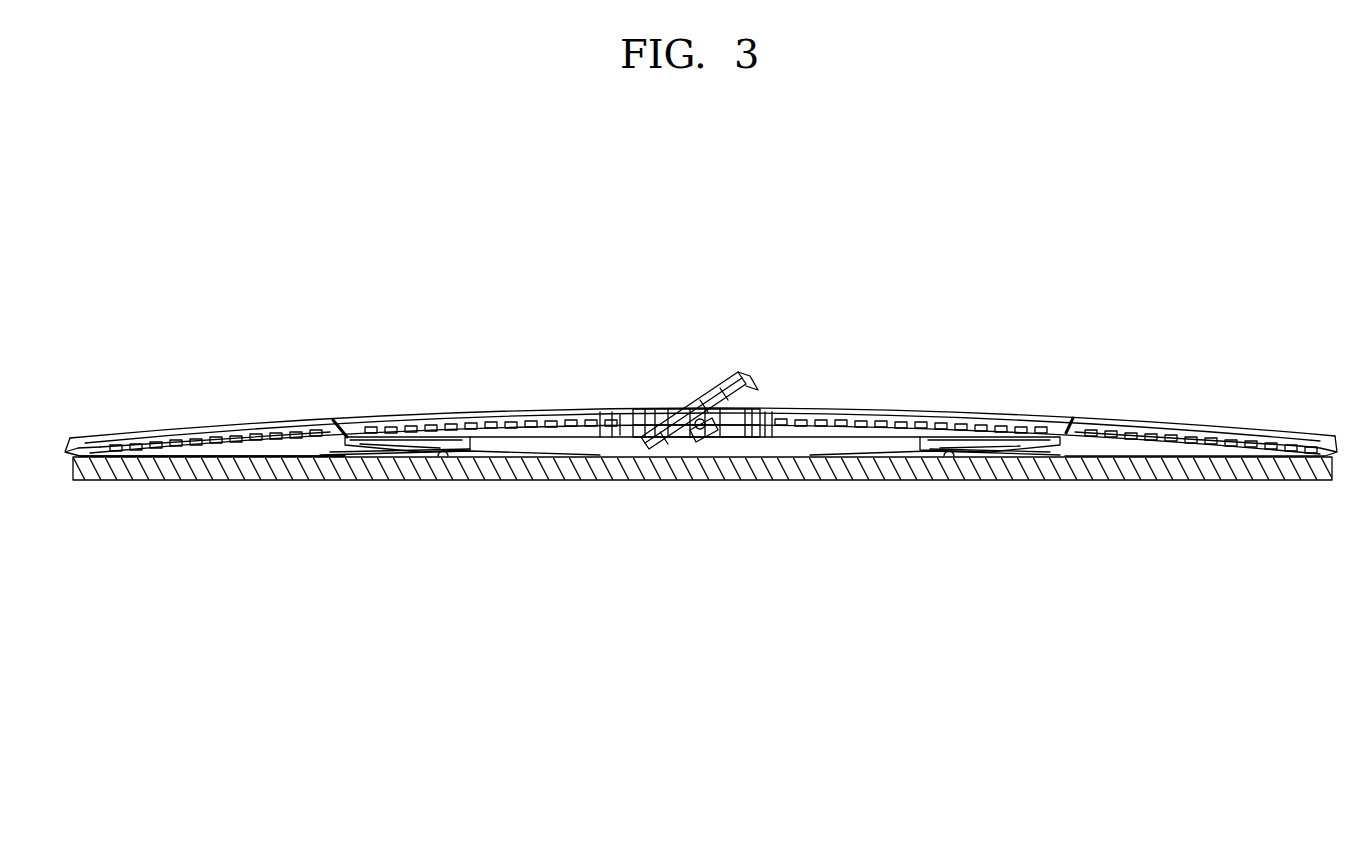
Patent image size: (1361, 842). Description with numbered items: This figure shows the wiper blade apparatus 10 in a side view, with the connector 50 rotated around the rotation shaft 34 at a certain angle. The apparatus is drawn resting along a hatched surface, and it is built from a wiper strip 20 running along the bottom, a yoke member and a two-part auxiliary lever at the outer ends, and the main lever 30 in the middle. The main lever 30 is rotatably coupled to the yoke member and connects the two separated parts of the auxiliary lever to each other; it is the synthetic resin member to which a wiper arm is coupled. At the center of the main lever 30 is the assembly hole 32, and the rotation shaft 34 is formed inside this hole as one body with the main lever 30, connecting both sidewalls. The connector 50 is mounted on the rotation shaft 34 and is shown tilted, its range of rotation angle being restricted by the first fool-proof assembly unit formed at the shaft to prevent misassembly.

The wiper blade apparatus 10 is at (701, 413).
The wiper strip 20 is at (233, 467).
The main lever 30 is at (500, 413).
The assembly hole 32 is at (667, 408).
The rotation shaft 34 is at (700, 433).
The connector 50 is at (714, 378).